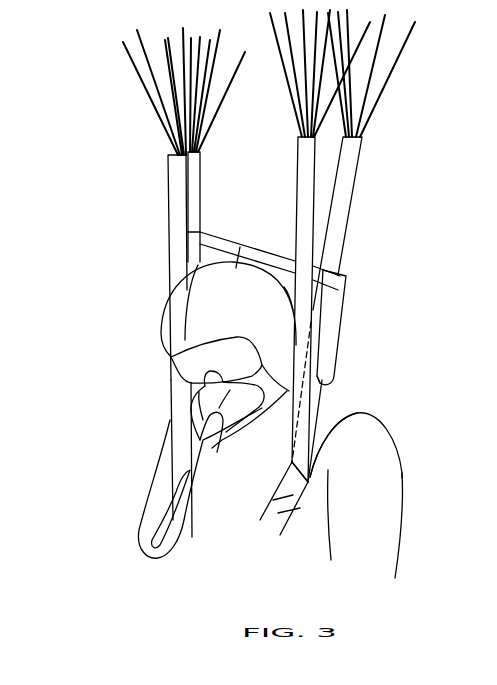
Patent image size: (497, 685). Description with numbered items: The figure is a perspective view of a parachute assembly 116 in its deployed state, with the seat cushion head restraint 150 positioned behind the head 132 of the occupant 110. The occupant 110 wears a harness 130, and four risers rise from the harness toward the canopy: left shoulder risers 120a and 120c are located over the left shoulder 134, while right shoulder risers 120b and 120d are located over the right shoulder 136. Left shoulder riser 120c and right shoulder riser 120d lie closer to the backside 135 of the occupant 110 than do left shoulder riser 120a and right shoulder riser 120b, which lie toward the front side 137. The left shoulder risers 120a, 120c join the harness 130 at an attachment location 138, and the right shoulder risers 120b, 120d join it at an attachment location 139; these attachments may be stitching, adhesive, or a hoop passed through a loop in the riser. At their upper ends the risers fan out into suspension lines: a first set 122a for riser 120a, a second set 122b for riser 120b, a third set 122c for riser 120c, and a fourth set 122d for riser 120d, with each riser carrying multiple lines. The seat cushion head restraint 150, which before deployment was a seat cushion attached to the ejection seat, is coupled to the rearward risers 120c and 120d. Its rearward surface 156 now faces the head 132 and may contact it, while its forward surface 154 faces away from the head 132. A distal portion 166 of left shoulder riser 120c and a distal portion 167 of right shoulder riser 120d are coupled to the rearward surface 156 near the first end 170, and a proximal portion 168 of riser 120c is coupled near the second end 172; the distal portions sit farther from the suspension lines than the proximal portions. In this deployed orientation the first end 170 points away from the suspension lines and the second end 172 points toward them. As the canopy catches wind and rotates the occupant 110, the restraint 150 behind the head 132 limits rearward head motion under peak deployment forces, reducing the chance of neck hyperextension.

The occupant 110 is at (152, 342).
The parachute assembly 116 is at (98, 100).
The left shoulder riser 120a is at (300, 157).
The right shoulder riser 120b is at (170, 174).
The left shoulder riser 120c is at (345, 170).
The right shoulder riser 120d is at (191, 195).
The first set of suspension lines 122a is at (301, 113).
The second set of suspension lines 122b is at (172, 150).
The third set of suspension lines 122c is at (363, 110).
The fourth set of suspension lines 122d is at (198, 151).
The harness 130 is at (274, 518).
The head 132 is at (228, 319).
The left shoulder 134 is at (356, 495).
The backside 135 is at (410, 468).
The right shoulder 136 is at (166, 442).
The front side 137 is at (231, 494).
The attachment location 138 is at (308, 489).
The attachment location 139 is at (166, 470).
The seat cushion head restraint 150 is at (288, 254).
The forward surface 154 is at (348, 336).
The rearward surface 156 is at (284, 287).
The distal portion 166 is at (318, 372).
The distal portion 167 is at (198, 247).
The proximal portion 168 is at (324, 287).
The first end 170 is at (334, 400).
The second end 172 is at (243, 250).